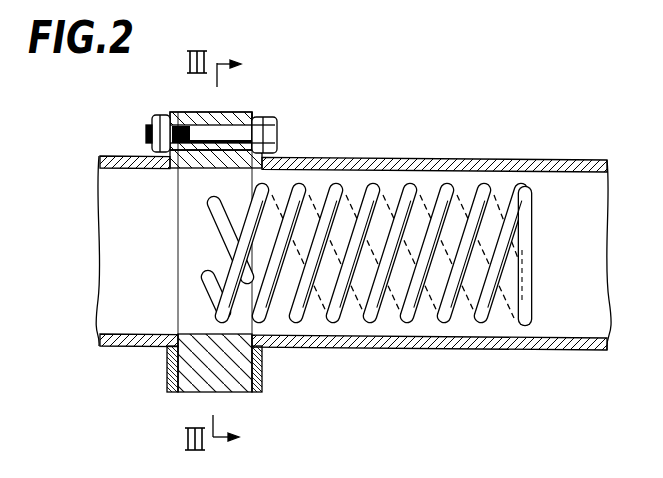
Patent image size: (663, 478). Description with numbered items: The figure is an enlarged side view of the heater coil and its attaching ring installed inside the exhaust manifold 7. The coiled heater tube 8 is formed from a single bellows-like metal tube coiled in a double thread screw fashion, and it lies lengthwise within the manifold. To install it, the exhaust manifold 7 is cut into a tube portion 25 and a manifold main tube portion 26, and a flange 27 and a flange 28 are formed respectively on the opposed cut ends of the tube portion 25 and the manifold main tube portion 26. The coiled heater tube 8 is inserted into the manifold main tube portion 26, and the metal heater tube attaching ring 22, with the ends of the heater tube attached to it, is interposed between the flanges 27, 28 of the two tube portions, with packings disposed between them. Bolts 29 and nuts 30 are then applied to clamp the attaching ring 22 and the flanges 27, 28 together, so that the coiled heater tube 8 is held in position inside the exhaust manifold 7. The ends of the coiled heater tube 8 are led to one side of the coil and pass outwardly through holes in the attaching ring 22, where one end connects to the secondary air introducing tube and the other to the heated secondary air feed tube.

The exhaust manifold 7 is at (513, 160).
The coiled heater tube 8 is at (392, 187).
The heater tube attaching ring 22 is at (240, 372).
The tube portion 25 is at (123, 347).
The manifold main tube portion 26 is at (388, 349).
The flange 27 is at (173, 112).
The flange 28 is at (251, 113).
The bolt 29 is at (270, 137).
The nut 30 is at (157, 117).